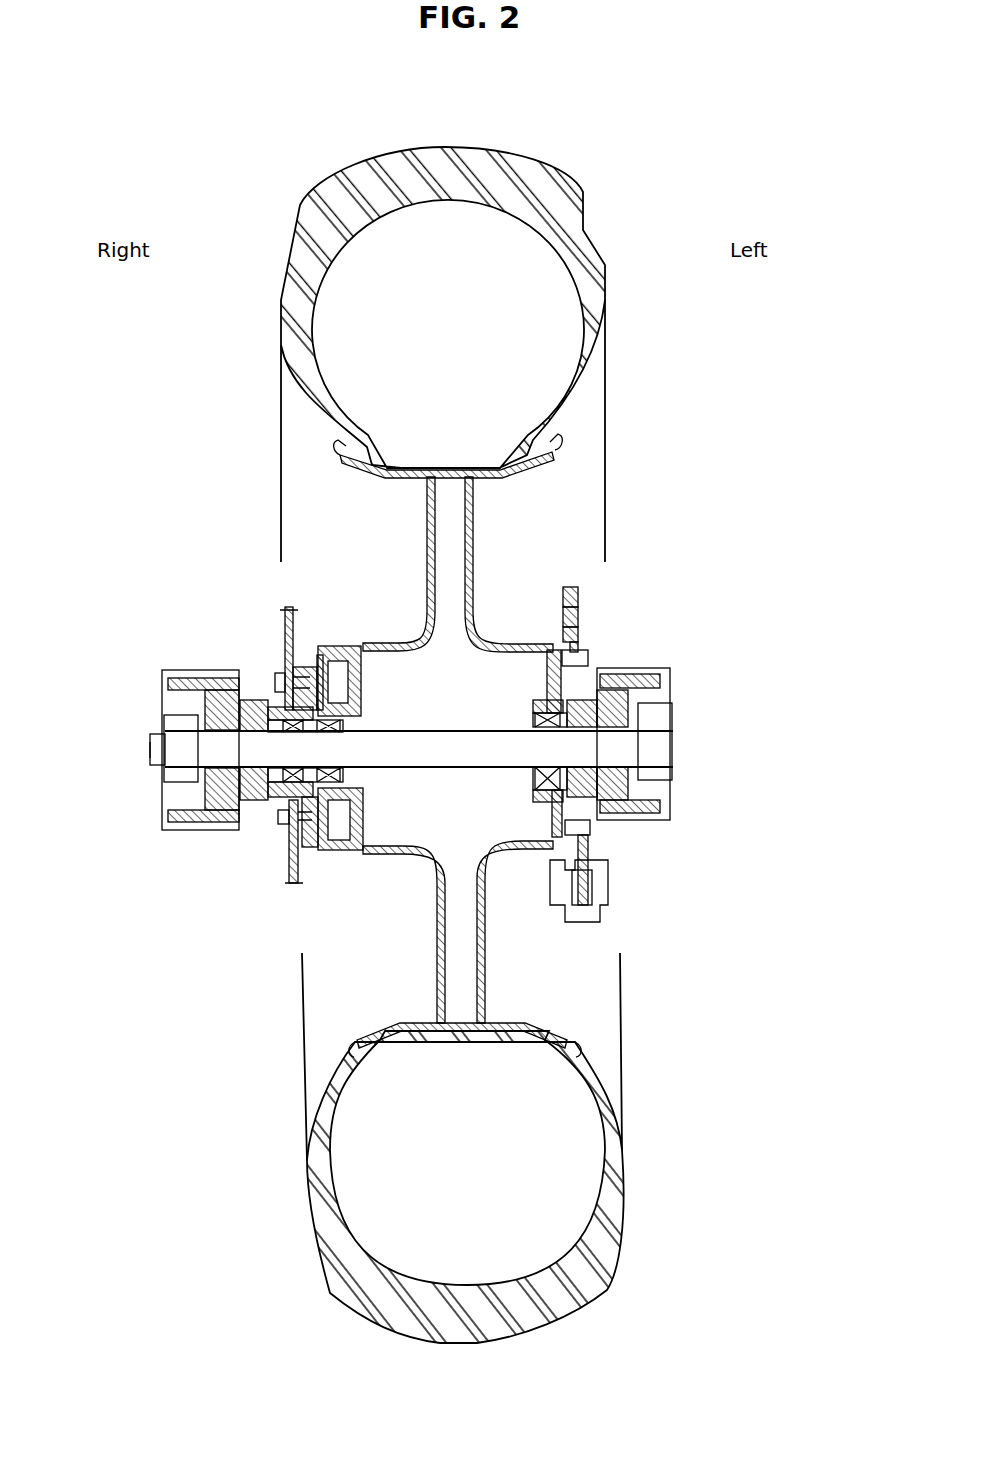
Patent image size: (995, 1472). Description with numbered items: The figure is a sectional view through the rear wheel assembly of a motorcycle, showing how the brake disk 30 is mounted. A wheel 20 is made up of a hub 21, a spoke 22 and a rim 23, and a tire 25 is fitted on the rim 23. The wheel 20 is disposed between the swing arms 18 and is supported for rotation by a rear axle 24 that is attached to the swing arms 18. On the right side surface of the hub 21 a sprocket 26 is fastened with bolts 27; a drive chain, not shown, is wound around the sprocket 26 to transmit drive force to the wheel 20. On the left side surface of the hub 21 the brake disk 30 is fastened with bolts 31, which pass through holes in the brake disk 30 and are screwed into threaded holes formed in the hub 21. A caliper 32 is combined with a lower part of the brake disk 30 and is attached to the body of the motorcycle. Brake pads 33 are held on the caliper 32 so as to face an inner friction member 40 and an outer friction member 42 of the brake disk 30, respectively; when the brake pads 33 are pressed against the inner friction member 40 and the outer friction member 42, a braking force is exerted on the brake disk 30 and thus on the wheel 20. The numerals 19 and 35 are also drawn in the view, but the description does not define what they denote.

The swing arms 18 is at (162, 690).
The wheel 19 is at (600, 255).
The wheel 20 is at (180, 420).
The hub 21 is at (289, 650).
The spoke 22 is at (427, 530).
The rim 23 is at (387, 480).
The rear axle 24 is at (210, 752).
The tire 25 is at (527, 157).
The sprocket 26 is at (296, 884).
The bolts 27 is at (278, 818).
The brake disk 30 is at (708, 505).
The bolts 31 is at (590, 660).
The caliper 32 is at (610, 905).
The brake pads 33 is at (592, 870).
The brake disc 35 is at (568, 590).
The inner friction member 40 is at (563, 605).
The outer friction member 42 is at (578, 618).